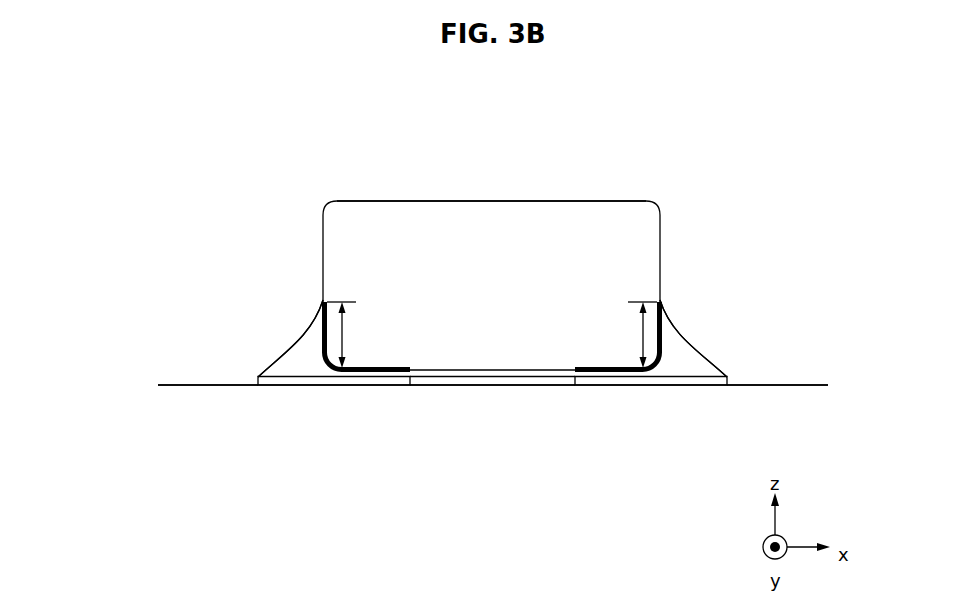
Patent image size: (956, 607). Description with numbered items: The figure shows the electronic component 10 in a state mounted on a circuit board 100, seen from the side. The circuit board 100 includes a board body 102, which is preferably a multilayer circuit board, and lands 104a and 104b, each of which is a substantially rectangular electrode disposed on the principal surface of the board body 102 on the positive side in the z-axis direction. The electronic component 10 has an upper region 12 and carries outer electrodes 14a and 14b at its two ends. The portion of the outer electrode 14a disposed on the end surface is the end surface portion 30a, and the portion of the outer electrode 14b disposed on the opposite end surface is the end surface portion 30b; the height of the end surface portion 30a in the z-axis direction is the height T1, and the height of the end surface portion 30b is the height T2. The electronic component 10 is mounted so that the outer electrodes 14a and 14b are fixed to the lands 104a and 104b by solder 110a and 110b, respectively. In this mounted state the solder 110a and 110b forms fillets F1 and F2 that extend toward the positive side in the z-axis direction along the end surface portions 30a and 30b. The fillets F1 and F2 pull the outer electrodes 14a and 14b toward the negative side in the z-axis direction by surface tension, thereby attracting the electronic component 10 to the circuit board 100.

The electronic component 10 is at (505, 201).
The top surface of component body 12 is at (449, 201).
The outer electrode 14a is at (397, 366).
The outer electrode 14b is at (587, 366).
The end surface portion 30a is at (323, 318).
The end surface portion 30b is at (661, 318).
The height T1 is at (354, 335).
The height T2 is at (633, 335).
The circuit board 100 is at (183, 372).
The board body 102 is at (238, 384).
The land 104a is at (382, 383).
The land 104b is at (608, 378).
The solder 110a is at (312, 368).
The solder 110b is at (677, 368).
The fillet F1 is at (317, 358).
The fillet F2 is at (670, 360).